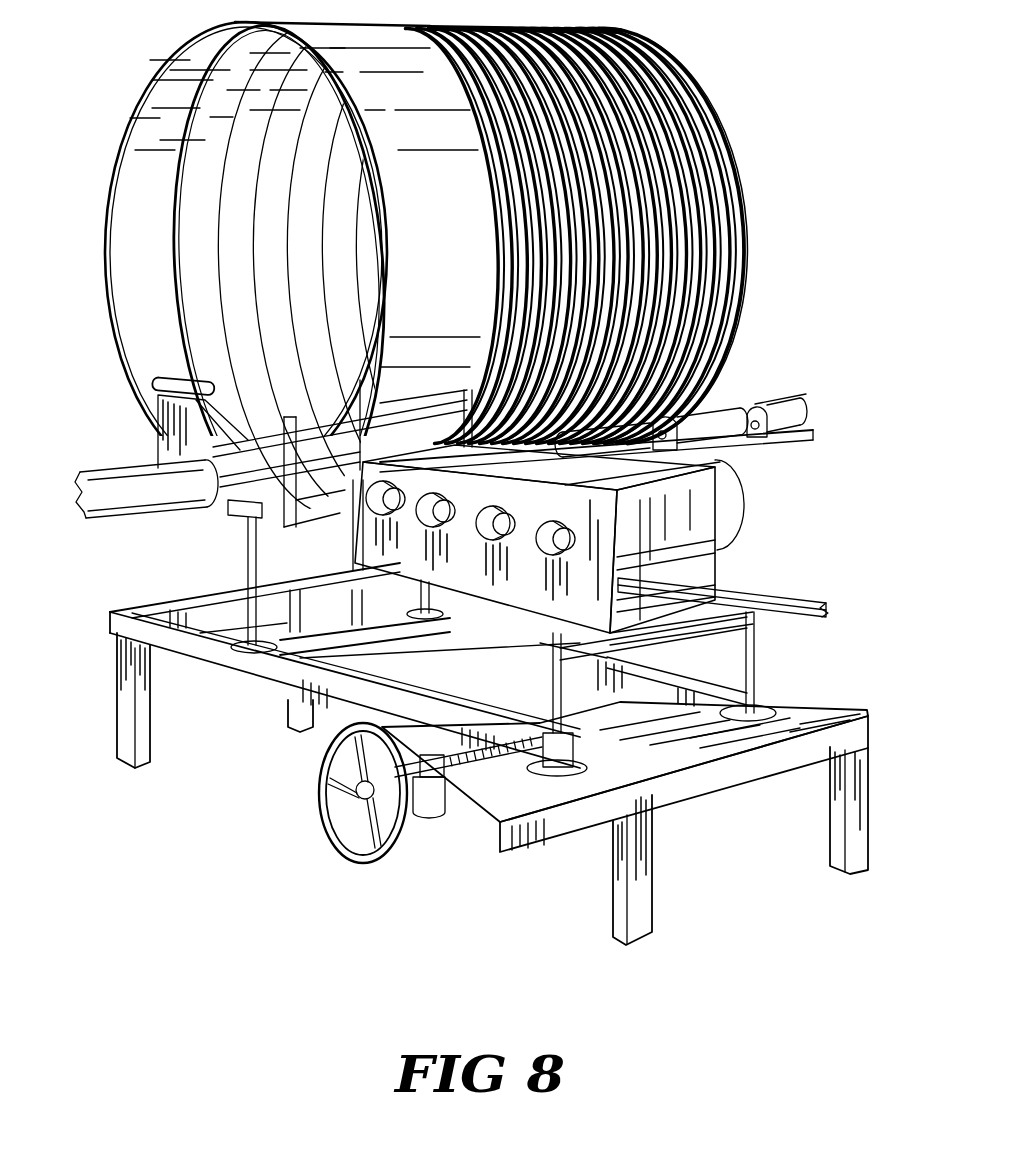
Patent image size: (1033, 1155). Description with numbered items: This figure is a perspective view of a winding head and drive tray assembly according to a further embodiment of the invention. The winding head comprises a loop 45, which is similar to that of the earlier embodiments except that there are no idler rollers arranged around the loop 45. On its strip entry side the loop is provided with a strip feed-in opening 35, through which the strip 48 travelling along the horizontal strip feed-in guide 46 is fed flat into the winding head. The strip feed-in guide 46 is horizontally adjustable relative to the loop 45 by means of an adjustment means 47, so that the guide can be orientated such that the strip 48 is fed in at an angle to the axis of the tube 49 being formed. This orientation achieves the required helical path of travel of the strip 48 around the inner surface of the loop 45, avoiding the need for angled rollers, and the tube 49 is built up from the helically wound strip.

The strip feed-in opening 35 is at (250, 517).
The loop 45 is at (420, 162).
The strip feed-in guide 46 is at (335, 497).
The adjustment means 47 is at (487, 772).
The strip 48 is at (745, 598).
The tube 49 is at (657, 147).